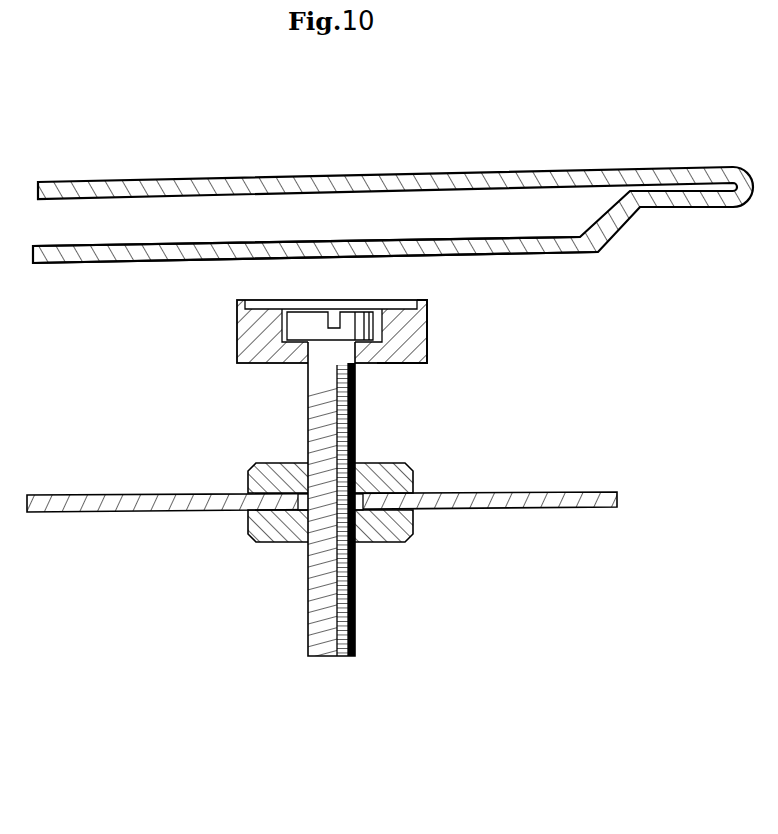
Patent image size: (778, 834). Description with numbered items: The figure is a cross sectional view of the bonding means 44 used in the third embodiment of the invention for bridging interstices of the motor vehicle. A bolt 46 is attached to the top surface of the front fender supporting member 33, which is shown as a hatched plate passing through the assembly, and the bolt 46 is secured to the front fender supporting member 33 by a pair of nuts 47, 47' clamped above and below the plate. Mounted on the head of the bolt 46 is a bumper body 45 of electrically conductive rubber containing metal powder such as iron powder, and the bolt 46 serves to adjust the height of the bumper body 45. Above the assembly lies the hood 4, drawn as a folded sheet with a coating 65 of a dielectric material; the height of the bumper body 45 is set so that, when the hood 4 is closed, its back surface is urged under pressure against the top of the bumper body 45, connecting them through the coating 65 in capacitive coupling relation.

The hood 4 is at (345, 178).
The coating of a dielectric material 65 is at (440, 256).
The bonding means 44 is at (237, 349).
The bumper body 45 is at (427, 356).
The bolt 46 is at (356, 414).
The nut 47 is at (345, 469).
The nut 47' is at (343, 543).
The front fender supporting member 33 is at (556, 491).